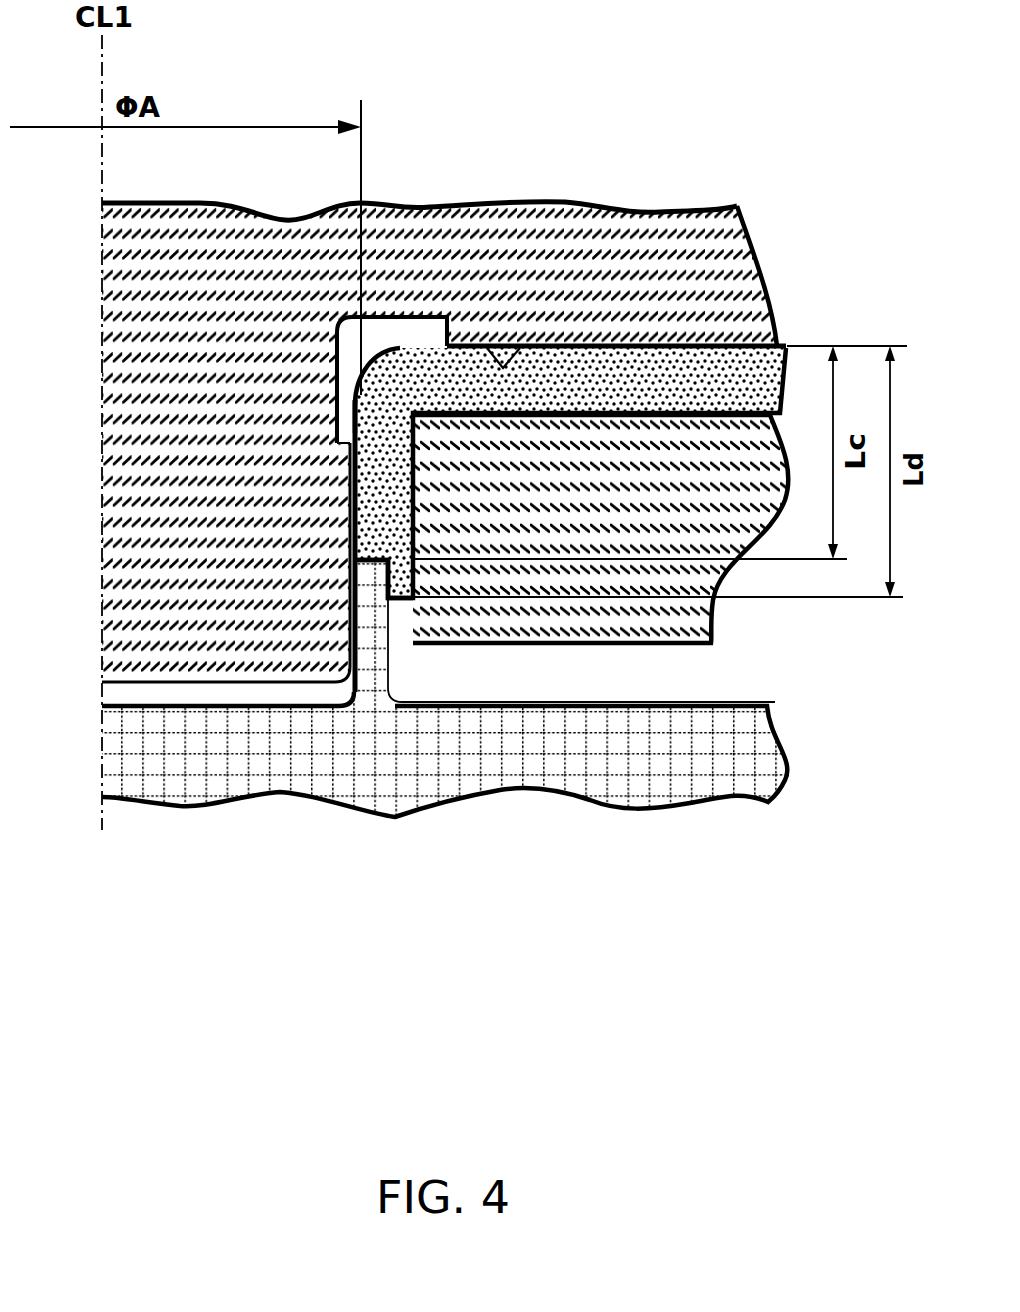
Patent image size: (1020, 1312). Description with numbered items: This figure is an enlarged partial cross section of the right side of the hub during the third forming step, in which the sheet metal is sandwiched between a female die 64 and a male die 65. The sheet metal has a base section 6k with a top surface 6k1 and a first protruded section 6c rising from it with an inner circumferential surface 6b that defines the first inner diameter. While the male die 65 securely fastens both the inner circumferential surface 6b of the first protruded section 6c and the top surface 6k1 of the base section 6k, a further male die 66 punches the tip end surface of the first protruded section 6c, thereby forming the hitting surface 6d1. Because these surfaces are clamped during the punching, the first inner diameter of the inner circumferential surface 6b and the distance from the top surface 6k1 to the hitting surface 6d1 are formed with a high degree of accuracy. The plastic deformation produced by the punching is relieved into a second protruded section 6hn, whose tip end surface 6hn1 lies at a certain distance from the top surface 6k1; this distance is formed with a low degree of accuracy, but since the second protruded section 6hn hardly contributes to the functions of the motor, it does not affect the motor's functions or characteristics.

The inner circumferential surface 6b is at (364, 391).
The top surface 6k1 is at (523, 348).
The base section 6k is at (612, 387).
The male die 65 is at (740, 275).
The first protruded section 6c is at (345, 477).
The hitting surface 6d1 is at (347, 525).
The tip end surface 6hn1 is at (401, 598).
The second protruded section 6hn is at (415, 582).
The male die 66 is at (635, 777).
The female die 64 is at (690, 617).